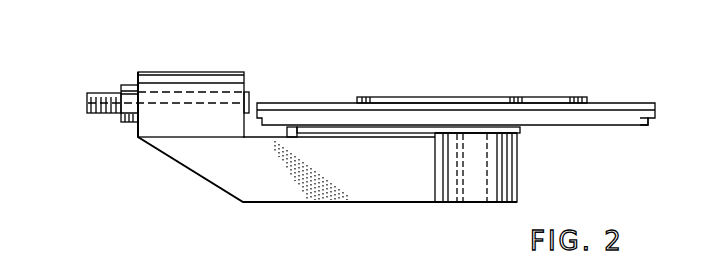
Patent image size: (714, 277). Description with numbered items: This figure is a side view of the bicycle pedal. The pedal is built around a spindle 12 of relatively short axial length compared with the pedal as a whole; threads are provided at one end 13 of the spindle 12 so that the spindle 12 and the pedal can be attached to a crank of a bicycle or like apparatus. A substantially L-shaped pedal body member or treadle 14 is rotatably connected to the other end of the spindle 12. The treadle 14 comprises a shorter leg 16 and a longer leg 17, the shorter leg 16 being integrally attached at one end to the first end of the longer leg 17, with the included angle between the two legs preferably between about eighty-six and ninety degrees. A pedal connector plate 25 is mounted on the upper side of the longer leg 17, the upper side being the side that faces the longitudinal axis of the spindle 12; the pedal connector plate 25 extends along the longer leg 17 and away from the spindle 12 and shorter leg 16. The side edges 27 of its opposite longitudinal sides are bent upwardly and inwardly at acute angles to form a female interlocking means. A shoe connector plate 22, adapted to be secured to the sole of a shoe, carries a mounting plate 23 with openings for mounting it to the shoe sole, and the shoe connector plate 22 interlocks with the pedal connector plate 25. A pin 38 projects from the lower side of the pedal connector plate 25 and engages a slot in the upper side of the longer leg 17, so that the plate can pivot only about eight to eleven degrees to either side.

The spindle 12 is at (128, 123).
The threaded end of spindle 13 is at (108, 97).
The pedal body member or treadle 14 is at (207, 187).
The shorter leg 16 is at (200, 80).
The longer leg 17 is at (402, 192).
The shoe connector plate 22 is at (315, 103).
The mounting plate 23 is at (488, 97).
The pedal connector plate 25 is at (392, 127).
The side edges 27 is at (633, 118).
The pin 38 is at (280, 127).